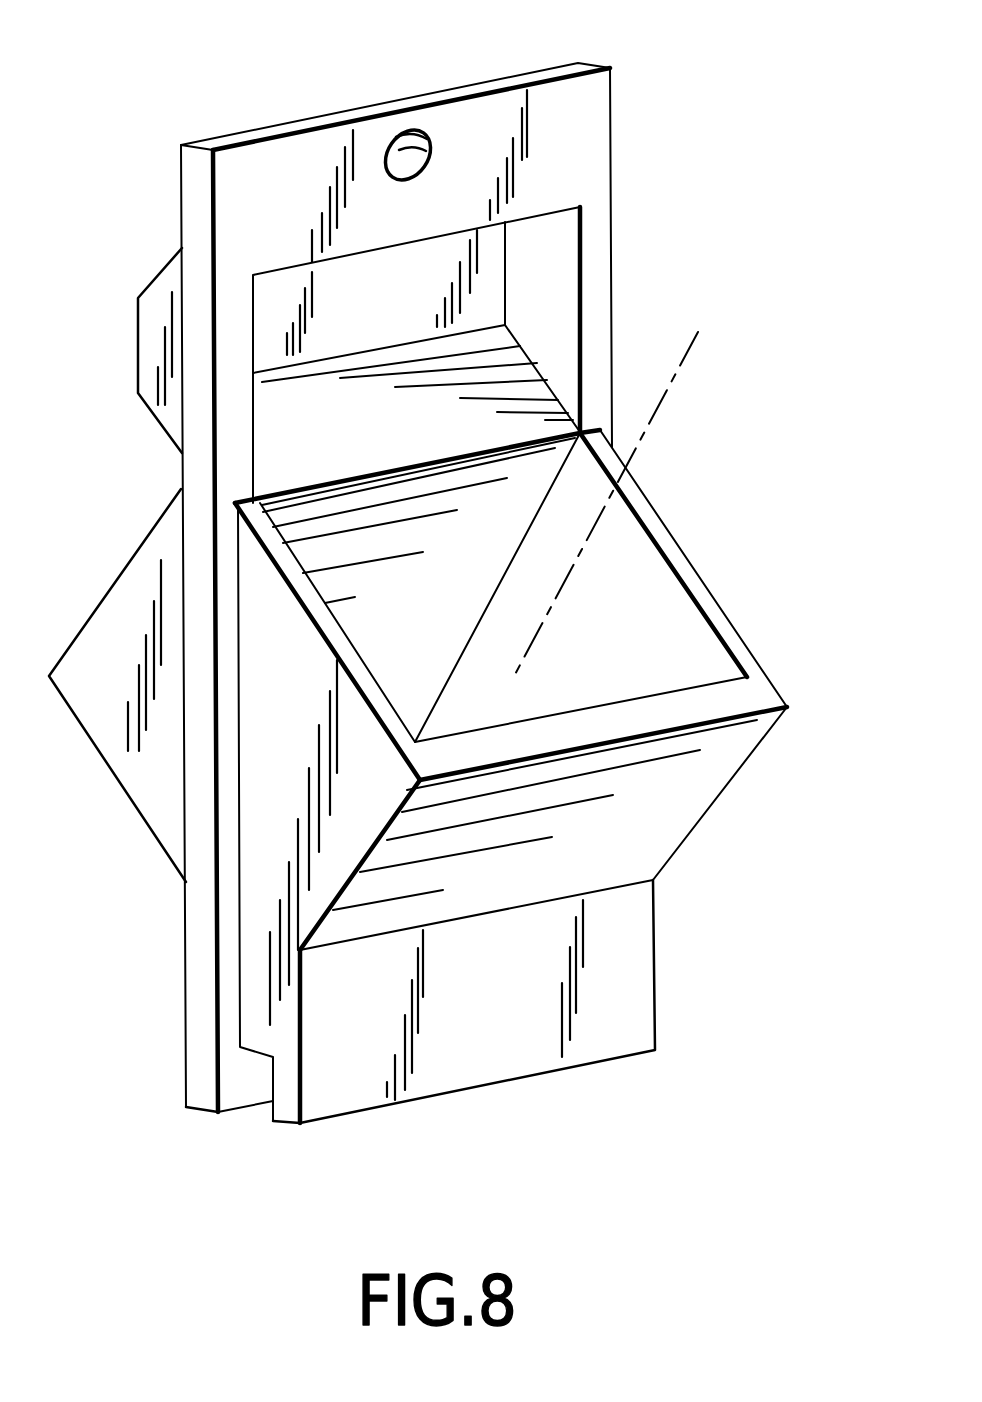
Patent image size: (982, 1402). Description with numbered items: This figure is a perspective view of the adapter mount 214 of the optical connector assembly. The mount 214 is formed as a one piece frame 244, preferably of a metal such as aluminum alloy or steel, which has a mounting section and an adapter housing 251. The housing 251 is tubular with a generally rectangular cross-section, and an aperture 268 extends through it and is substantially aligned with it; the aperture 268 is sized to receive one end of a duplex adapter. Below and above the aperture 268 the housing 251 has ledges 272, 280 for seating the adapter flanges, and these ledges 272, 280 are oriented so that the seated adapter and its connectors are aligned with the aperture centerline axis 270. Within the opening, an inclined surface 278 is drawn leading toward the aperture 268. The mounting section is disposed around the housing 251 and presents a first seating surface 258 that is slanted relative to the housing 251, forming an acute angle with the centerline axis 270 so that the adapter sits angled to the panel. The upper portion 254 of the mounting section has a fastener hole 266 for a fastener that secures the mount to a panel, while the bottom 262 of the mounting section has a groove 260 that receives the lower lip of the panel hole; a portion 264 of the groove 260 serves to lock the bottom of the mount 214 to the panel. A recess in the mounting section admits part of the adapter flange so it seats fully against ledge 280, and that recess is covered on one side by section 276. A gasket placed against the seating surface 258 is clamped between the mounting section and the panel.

The mount 214 is at (648, 197).
The one piece frame 244 is at (487, 127).
The upper portion of the mounting section 254 is at (200, 213).
The first seating surface 258 is at (577, 122).
The fastener hole 266 is at (408, 128).
The ledge 280 is at (322, 410).
The inclined shelf surface 278 is at (487, 296).
The section 276 is at (152, 353).
The aperture centerline axis 270 is at (653, 412).
The aperture 268 is at (632, 587).
The ledge 272 is at (717, 700).
The adapter housing 251 is at (685, 785).
The portion of the groove 264 is at (288, 1107).
The groove 260 is at (252, 1077).
The bottom of the mounting section 262 is at (200, 1070).